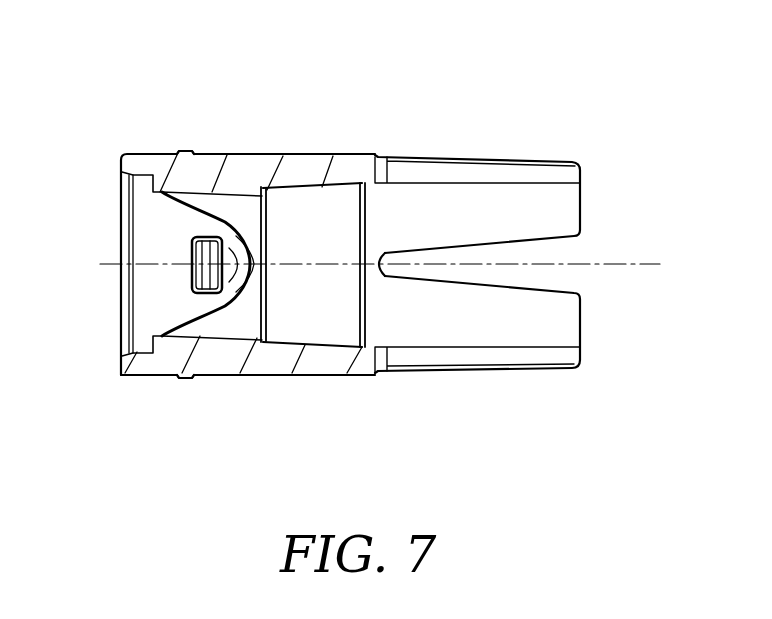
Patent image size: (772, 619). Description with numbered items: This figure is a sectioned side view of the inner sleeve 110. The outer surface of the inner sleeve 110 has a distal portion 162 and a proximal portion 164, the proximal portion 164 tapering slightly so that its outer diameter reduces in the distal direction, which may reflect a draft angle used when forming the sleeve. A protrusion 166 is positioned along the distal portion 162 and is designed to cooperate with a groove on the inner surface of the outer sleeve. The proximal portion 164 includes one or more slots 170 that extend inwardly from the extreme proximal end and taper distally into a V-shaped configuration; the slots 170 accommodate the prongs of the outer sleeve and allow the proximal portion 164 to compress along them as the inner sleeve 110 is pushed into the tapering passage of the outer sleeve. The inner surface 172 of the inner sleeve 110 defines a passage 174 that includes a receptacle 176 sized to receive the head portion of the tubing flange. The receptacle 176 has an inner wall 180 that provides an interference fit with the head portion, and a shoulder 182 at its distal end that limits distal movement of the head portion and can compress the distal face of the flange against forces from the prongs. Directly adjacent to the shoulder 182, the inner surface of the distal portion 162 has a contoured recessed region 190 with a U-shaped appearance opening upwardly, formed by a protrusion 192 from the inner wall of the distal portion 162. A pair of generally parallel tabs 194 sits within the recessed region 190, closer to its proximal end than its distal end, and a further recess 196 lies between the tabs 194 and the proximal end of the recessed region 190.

The inner sleeve 110 is at (636, 109).
The distal portion 162 is at (138, 150).
The proximal portion 164 is at (490, 158).
The protrusion 166 is at (183, 150).
The slots 170 is at (561, 291).
The inner surface 172 is at (452, 330).
The passage 174 is at (389, 218).
The receptacle 176 is at (320, 322).
The inner wall 180 is at (303, 185).
The shoulder 182 is at (267, 337).
The contoured recessed region 190 is at (165, 220).
The protrusion 192 is at (173, 322).
The tabs 194 is at (193, 274).
The further recess 196 is at (236, 228).